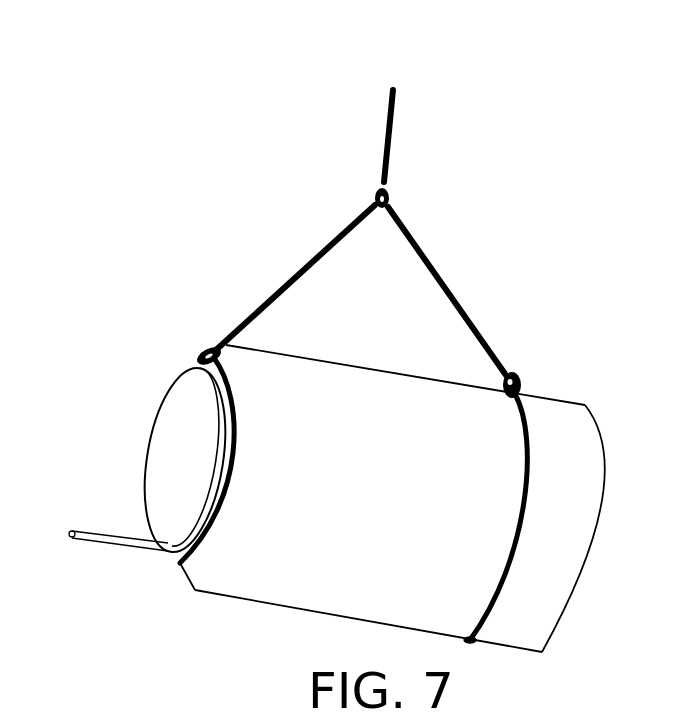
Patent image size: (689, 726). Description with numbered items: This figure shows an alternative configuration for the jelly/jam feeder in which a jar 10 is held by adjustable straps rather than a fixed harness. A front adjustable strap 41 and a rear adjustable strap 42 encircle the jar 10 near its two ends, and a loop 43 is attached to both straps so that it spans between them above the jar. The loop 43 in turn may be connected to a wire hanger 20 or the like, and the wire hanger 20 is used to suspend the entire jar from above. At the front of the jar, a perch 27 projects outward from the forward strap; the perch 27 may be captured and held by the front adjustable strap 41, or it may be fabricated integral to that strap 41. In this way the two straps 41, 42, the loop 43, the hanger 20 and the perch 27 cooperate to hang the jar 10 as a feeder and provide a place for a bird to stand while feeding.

The container body 10 is at (357, 524).
The wire hanger 20 is at (397, 92).
The perch 27 is at (70, 531).
The front adjustable strap 41 is at (241, 434).
The rear adjustable strap 42 is at (520, 505).
The loop 43 is at (457, 292).